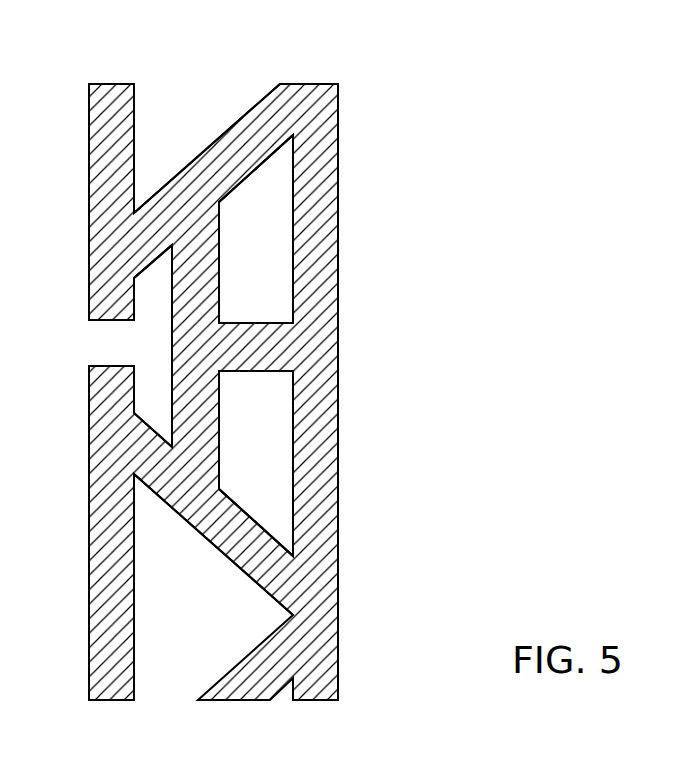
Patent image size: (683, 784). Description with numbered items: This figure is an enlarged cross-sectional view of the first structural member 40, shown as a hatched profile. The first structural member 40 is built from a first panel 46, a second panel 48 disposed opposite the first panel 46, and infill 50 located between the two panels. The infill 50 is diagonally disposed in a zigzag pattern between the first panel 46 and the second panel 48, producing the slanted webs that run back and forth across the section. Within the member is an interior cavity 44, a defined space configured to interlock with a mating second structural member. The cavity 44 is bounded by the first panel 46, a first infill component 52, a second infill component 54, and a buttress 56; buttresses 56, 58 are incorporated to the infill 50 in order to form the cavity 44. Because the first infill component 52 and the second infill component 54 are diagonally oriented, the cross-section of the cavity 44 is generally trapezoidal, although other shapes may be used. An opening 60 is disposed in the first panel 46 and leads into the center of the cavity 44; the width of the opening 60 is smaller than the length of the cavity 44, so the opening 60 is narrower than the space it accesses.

The first structural member 40 is at (392, 113).
The interior cavity 44 is at (152, 262).
The first panel 46 is at (108, 141).
The second panel 48 is at (333, 253).
The infill 50 is at (163, 143).
The first infill component 52 is at (226, 168).
The second infill component 54 is at (232, 518).
The buttress 56 is at (205, 279).
The buttress 58 is at (258, 350).
The opening 60 is at (108, 376).